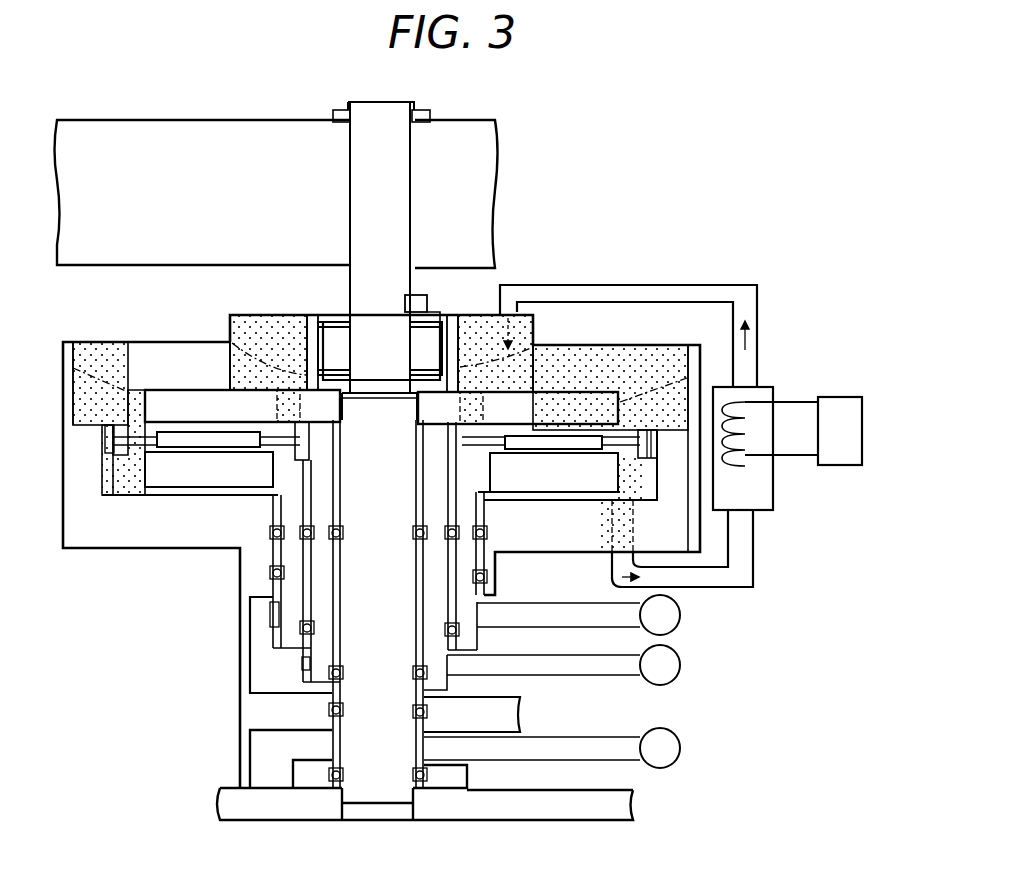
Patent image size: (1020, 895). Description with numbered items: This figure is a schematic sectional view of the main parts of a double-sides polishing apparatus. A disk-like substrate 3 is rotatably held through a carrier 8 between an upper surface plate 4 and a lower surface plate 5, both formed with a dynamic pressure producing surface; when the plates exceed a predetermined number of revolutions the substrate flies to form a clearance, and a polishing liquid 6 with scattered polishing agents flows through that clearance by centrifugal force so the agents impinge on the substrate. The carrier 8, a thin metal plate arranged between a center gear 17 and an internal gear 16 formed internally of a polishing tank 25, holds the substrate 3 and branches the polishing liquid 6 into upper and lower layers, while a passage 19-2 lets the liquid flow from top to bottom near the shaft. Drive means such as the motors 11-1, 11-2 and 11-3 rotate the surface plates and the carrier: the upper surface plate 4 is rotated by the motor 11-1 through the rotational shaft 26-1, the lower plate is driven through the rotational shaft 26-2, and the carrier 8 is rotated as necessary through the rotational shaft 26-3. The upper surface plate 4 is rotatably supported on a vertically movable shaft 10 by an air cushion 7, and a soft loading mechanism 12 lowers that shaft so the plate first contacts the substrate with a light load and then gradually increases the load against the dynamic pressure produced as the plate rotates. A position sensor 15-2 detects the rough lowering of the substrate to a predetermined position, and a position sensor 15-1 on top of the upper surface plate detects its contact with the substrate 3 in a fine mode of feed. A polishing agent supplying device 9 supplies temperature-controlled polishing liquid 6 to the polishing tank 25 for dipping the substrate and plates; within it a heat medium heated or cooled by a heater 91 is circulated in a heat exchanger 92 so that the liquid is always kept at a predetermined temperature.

The substrate 3 is at (166, 448).
The upper surface plate 4 is at (190, 400).
The lower surface plate 5 is at (190, 500).
The polishing liquid 6 is at (160, 400).
The air cushion 7 is at (322, 330).
The carrier 8 is at (136, 395).
The polishing agent supplying device 9 is at (752, 500).
The vertically movable shaft 10 is at (400, 157).
The soft loading mechanism 12 is at (418, 196).
The position sensor 15-1 is at (428, 298).
The position sensor 15-2 is at (432, 115).
The internal gear 16 is at (110, 425).
The center gear 17 is at (290, 458).
The passage 19-2 is at (485, 393).
The polishing tank 25 is at (87, 342).
The rotational shaft 26-1 is at (348, 737).
The rotational shaft 26-2 is at (285, 632).
The rotational shaft 26-3 is at (320, 677).
The motor 11-1 is at (680, 745).
The motor 11-2 is at (680, 615).
The motor 11-3 is at (680, 668).
The heater 91 is at (838, 397).
The heat exchanger 92 is at (748, 405).